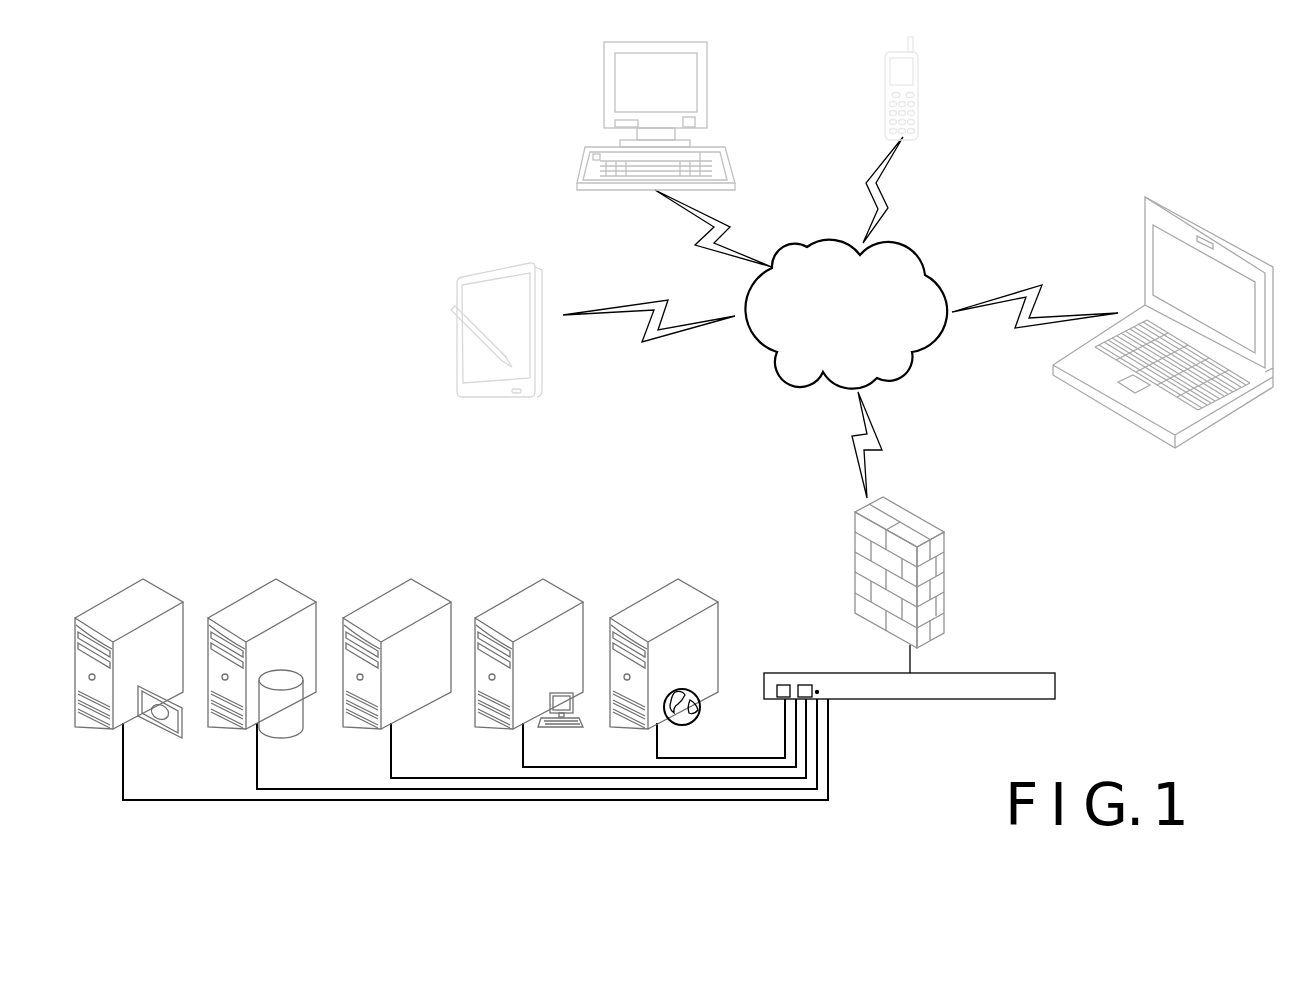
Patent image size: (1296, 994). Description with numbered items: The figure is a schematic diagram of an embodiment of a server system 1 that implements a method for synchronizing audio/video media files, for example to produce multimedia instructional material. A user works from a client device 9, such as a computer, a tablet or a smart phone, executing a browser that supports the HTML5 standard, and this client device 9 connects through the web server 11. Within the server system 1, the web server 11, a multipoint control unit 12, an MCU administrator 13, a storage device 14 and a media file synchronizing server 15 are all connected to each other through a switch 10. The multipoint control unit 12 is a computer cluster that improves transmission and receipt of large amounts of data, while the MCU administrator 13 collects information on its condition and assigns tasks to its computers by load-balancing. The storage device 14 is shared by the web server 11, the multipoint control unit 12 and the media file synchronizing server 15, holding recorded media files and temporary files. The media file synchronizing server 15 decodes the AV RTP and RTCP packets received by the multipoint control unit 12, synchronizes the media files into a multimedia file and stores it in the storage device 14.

The server system 1 is at (303, 538).
The client device 9 is at (610, 95).
The switch 10 is at (973, 671).
The web server 11 is at (663, 602).
The multipoint control unit 12 is at (397, 600).
The MCU administrator 13 is at (532, 602).
The storage device 14 is at (263, 602).
The media file synchronizing server 15 is at (130, 602).